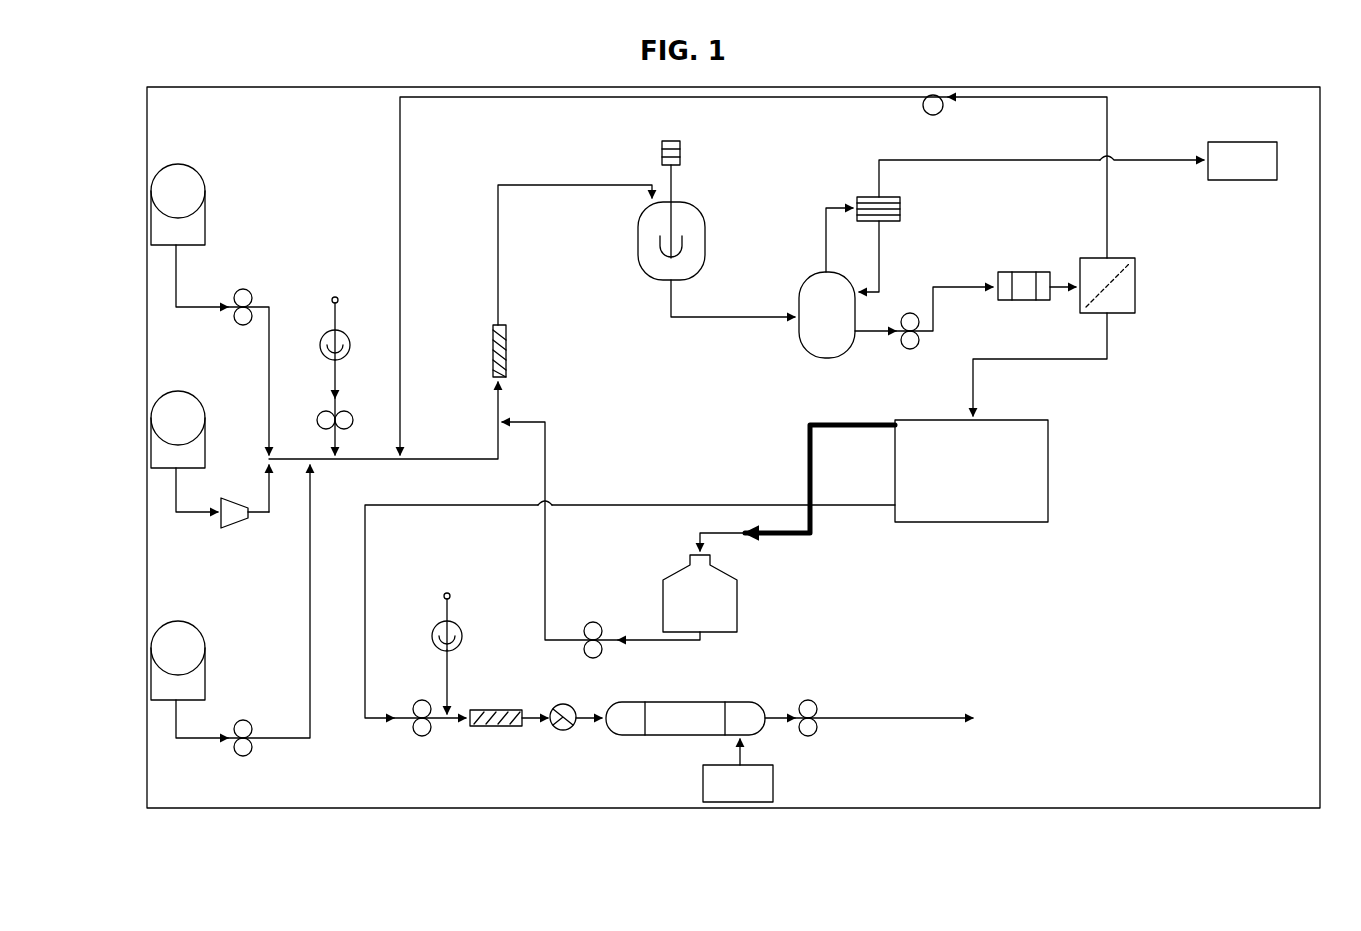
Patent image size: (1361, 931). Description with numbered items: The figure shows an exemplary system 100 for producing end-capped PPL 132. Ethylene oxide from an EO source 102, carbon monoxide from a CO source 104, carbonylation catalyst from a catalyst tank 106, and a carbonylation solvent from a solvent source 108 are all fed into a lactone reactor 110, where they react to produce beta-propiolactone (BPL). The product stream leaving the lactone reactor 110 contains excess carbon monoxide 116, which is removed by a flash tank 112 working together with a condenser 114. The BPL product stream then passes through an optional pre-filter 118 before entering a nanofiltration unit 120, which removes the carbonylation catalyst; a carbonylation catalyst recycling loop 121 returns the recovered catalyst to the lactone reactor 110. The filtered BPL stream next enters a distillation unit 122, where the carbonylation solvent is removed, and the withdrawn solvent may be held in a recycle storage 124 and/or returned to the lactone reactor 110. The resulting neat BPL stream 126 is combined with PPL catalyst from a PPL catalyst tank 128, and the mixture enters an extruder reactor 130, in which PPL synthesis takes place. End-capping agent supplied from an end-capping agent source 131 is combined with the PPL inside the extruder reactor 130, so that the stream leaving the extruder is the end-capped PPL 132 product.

The system 100 is at (462, 36).
The EO source 102 is at (210, 292).
The CO source 104 is at (210, 442).
The catalyst tank 106 is at (328, 327).
The solvent source 108 is at (230, 610).
The lactone reactor 110 is at (644, 259).
The flash tank 112 is at (893, 299).
The condenser 114 is at (1030, 224).
The excess carbon monoxide 116 is at (1242, 146).
The pre-filter 118 is at (1013, 314).
The nanofiltration unit 120 is at (1131, 337).
The carbonylation catalyst recycling loop 121 is at (753, 275).
The distillation unit 122 is at (896, 489).
The recycle storage 124 is at (691, 542).
The neat BPL stream 126 is at (630, 580).
The PPL catalyst tank 128 is at (487, 634).
The extruder reactor 130 is at (711, 706).
The end-capping agent source 131 is at (791, 773).
The end-capped PPL 132 is at (969, 722).